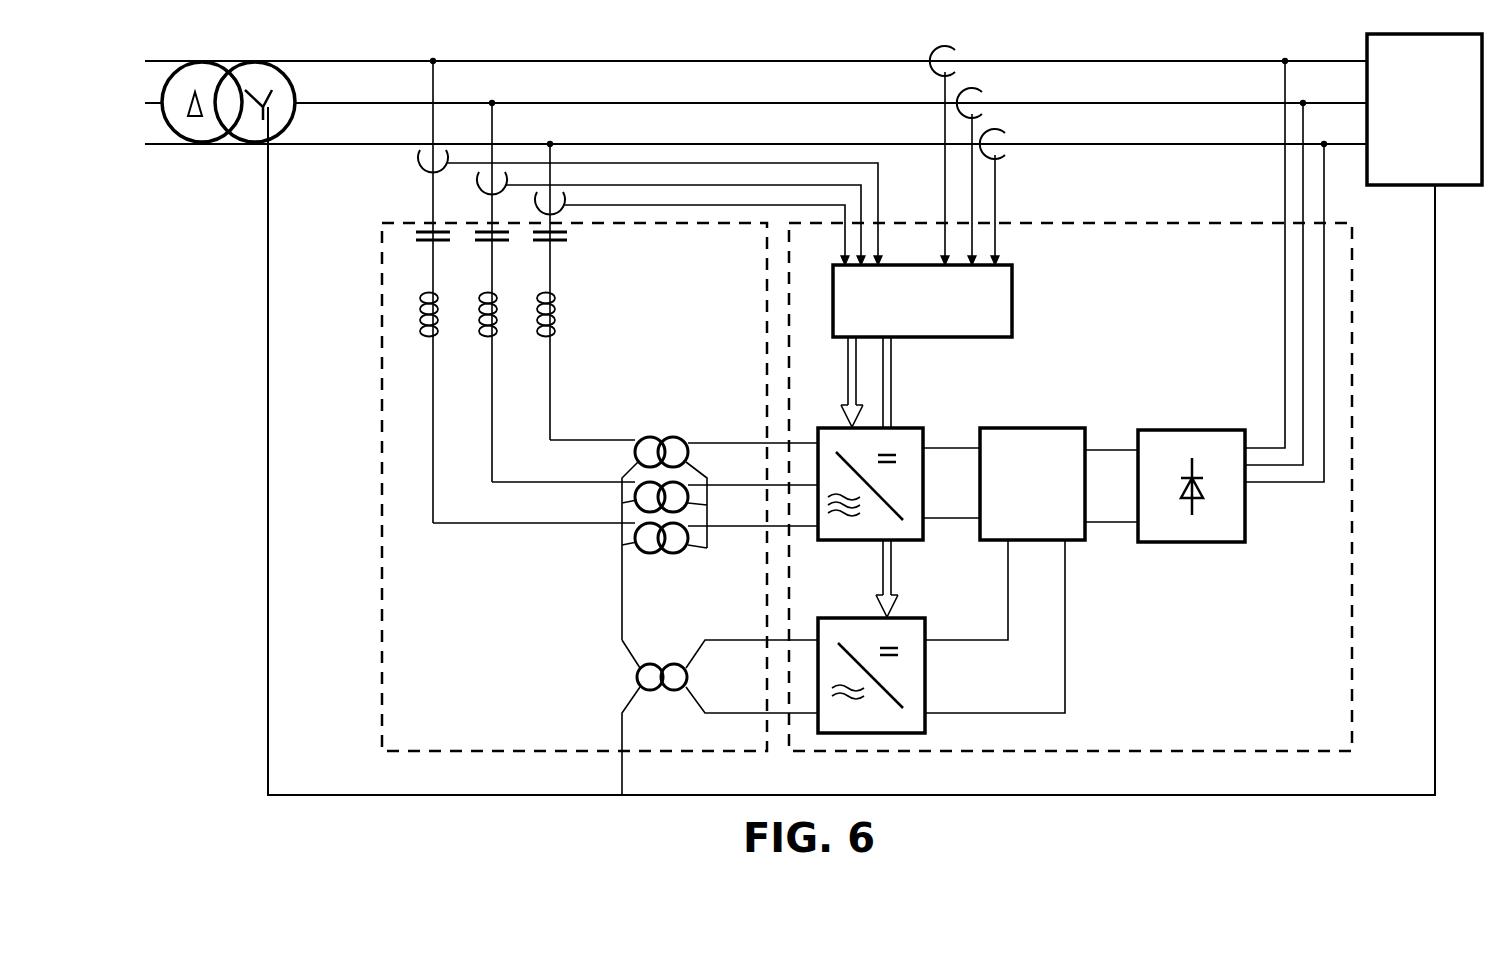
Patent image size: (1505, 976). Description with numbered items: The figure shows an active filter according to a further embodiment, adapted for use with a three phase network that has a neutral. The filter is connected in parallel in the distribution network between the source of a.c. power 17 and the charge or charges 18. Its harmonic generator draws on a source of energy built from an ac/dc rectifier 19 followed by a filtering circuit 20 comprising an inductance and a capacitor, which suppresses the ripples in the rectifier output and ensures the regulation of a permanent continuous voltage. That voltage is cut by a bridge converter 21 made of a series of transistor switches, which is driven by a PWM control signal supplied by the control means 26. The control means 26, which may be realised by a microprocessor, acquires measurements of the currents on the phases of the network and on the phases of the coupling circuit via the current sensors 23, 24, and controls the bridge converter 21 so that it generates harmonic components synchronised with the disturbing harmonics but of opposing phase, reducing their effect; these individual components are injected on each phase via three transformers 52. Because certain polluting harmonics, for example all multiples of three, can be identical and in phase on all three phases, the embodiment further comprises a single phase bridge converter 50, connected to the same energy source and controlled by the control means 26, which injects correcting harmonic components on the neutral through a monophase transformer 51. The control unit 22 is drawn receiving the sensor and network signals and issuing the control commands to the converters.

The source of a.c. power 17 is at (272, 58).
The charge 18 is at (1366, 52).
The ac/dc rectifier 19 is at (1188, 428).
The filtering circuit 20 is at (1030, 427).
The bridge converter 21 is at (908, 427).
The control unit 22 is at (1012, 312).
The current sensor 23 is at (970, 52).
The current sensor 24 is at (420, 170).
The control means 26 is at (596, 298).
The single phase bridge converter 50 is at (885, 733).
The monophase transformer 51 is at (672, 718).
The transformers 52 is at (660, 432).